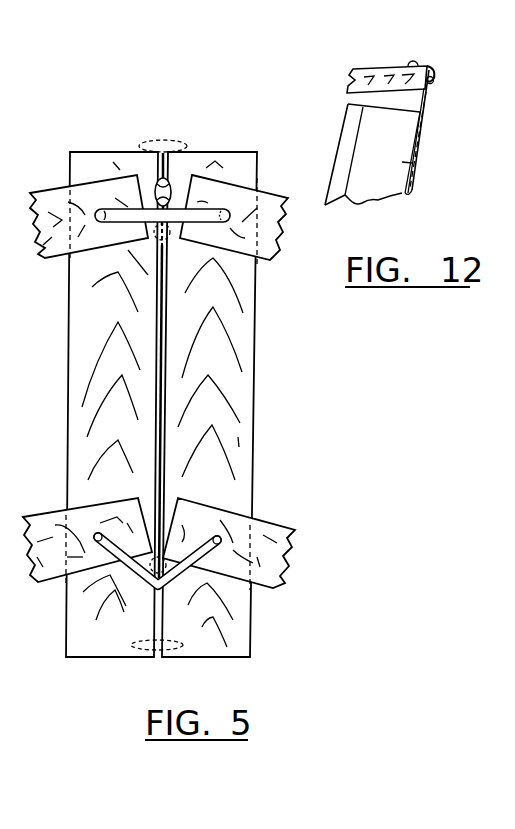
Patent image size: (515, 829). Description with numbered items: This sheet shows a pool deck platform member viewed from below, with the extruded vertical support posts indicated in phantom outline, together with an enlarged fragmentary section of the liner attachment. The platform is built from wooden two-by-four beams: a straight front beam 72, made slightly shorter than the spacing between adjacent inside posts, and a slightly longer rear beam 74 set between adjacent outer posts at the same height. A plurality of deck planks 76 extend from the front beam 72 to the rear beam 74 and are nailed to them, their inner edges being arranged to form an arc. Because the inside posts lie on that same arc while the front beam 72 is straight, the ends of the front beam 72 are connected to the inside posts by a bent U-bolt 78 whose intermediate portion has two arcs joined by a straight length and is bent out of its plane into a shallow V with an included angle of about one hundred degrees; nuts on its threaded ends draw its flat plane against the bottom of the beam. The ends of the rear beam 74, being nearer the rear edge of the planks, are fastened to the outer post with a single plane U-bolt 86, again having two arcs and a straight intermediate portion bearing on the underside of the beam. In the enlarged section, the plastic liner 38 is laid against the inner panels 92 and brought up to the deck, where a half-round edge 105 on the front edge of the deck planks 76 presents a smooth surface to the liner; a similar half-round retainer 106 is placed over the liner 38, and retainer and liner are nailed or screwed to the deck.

In FIG. 12, the plastic liner 38 is at (430, 108).
In FIG. 5, the front beam 72 is at (40, 547).
In FIG. 5, the rear beam 74 is at (272, 203).
In FIG. 5, the deck planks 76 is at (80, 360).
In FIG. 12, the deck planks 76 is at (382, 76).
In FIG. 5, the bent U-bolt 78 is at (137, 575).
In FIG. 5, the single plane U-bolt 86 is at (128, 208).
In FIG. 12, the inner panels 92 is at (412, 171).
In FIG. 12, the half-round edge 105 is at (433, 78).
In FIG. 12, the half-round retainer 106 is at (417, 60).